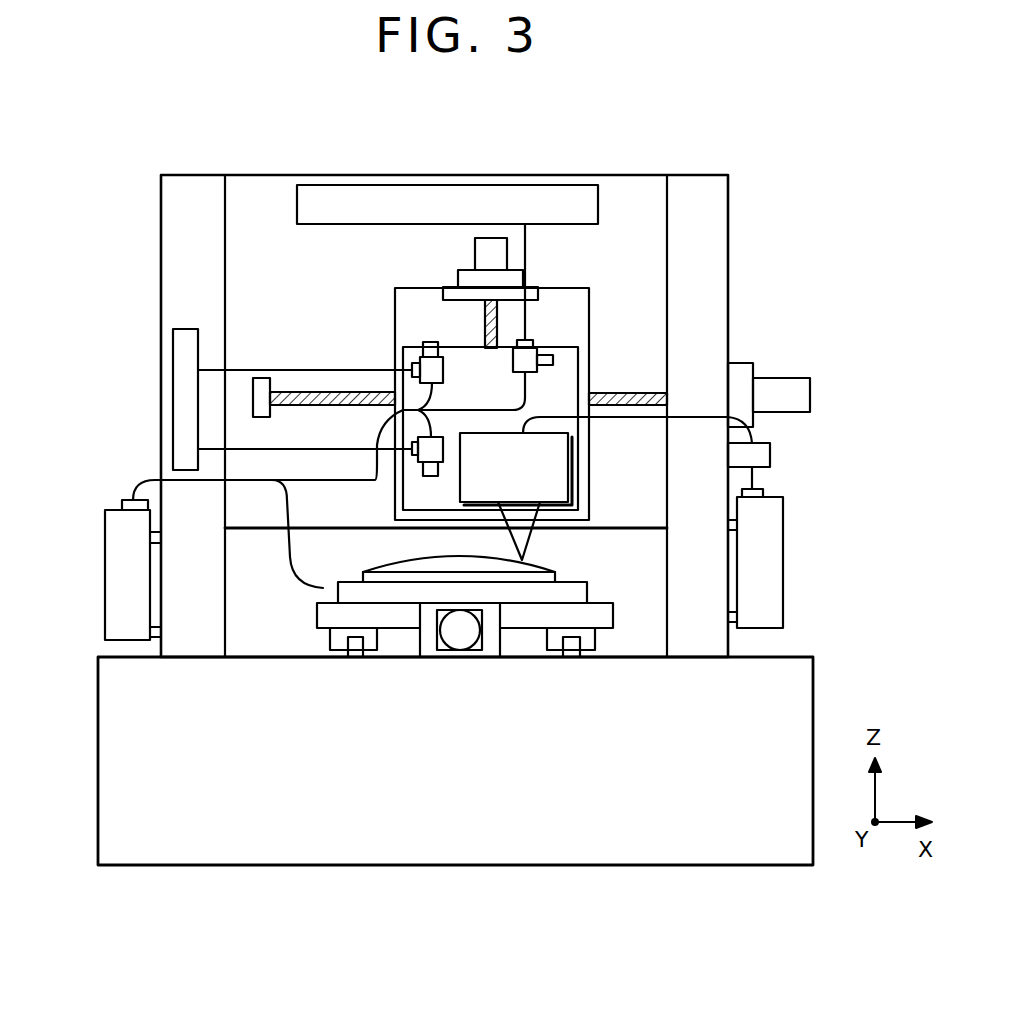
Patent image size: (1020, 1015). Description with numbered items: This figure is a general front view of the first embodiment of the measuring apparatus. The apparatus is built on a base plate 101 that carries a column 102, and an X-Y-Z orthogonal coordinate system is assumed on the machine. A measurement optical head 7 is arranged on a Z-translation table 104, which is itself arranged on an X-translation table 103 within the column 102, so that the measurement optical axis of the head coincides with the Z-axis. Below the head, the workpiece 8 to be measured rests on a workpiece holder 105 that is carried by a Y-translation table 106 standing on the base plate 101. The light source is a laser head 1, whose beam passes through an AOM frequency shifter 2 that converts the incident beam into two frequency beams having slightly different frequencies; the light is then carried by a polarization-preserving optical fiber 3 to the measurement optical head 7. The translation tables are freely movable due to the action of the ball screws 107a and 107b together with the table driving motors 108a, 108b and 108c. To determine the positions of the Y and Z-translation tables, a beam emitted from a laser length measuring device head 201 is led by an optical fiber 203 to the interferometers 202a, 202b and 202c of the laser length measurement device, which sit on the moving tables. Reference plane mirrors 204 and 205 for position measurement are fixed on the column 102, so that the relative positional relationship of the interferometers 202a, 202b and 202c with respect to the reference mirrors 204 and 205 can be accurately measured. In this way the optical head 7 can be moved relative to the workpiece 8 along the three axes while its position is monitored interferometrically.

The laser head 1 is at (773, 533).
The AOM frequency shifter 2 is at (766, 453).
The polarization-preserving optical fiber 3 is at (683, 417).
The measurement optical head 7 is at (524, 484).
The workpiece 8 is at (397, 562).
The base plate 101 is at (197, 768).
The column 102 is at (279, 264).
The X-translation table 103 is at (447, 333).
The Z-translation table 104 is at (502, 396).
The workpiece holder 105 is at (570, 588).
The Y-translation table 106 is at (317, 612).
The ball screw 107a is at (607, 391).
The ball screw 107b is at (502, 330).
The table driving motor 108a is at (773, 388).
The table driving motor 108b is at (485, 255).
The table driving motor 108c is at (458, 645).
The laser length measuring device head 201 is at (112, 545).
The interferometer 202a is at (423, 362).
The interferometer 202b is at (427, 452).
The interferometer 202c is at (528, 357).
The optical fiber 203 is at (223, 478).
The reference plane mirror 204 is at (188, 335).
The reference plane mirror 205 is at (471, 216).